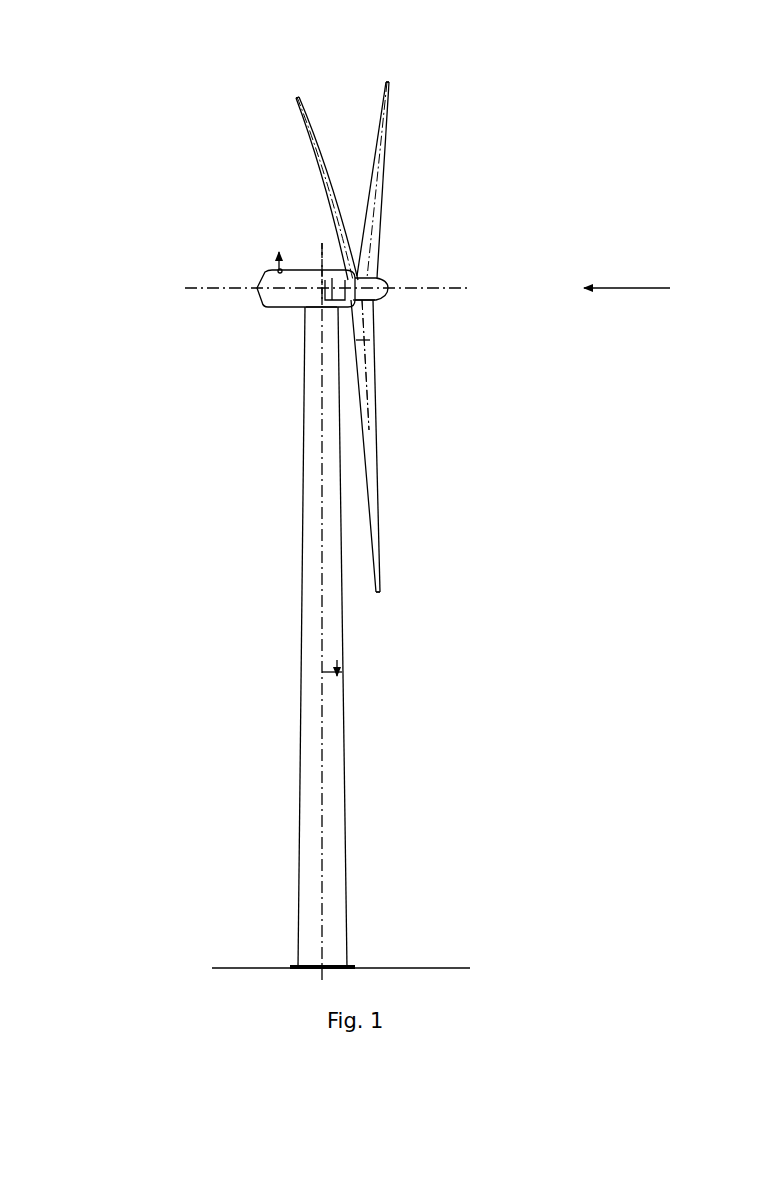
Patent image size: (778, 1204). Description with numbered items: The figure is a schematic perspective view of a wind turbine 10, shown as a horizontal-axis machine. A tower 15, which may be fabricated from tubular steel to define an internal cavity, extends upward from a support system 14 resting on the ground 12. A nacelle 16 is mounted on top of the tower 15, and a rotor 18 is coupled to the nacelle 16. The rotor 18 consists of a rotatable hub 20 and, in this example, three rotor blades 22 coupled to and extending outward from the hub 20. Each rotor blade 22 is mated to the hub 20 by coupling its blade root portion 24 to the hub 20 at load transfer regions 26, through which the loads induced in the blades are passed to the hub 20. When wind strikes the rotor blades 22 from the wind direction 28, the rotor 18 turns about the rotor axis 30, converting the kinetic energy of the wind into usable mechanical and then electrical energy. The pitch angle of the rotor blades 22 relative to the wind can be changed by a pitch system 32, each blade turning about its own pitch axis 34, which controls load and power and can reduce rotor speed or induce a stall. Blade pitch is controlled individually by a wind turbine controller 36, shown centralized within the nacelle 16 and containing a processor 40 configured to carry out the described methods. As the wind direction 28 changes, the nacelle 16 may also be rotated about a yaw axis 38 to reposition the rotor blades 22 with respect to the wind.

The wind turbine 10 is at (112, 102).
The ground 12 is at (232, 967).
The support system 14 is at (292, 966).
The tower 15 is at (302, 612).
The nacelle 16 is at (279, 307).
The rotor 18 is at (394, 204).
The rotatable hub 20 is at (386, 287).
The rotor blade 22 is at (316, 160).
The blade root portion 24 is at (370, 380).
The load transfer regions 26 is at (375, 306).
The wind direction 28 is at (645, 287).
The rotor axis 30 is at (432, 289).
The pitch system 32 is at (372, 336).
The pitch axes 34 is at (296, 100).
The wind turbine controller 36 is at (325, 318).
The yaw axis 38 is at (343, 672).
The processor 40 is at (320, 240).